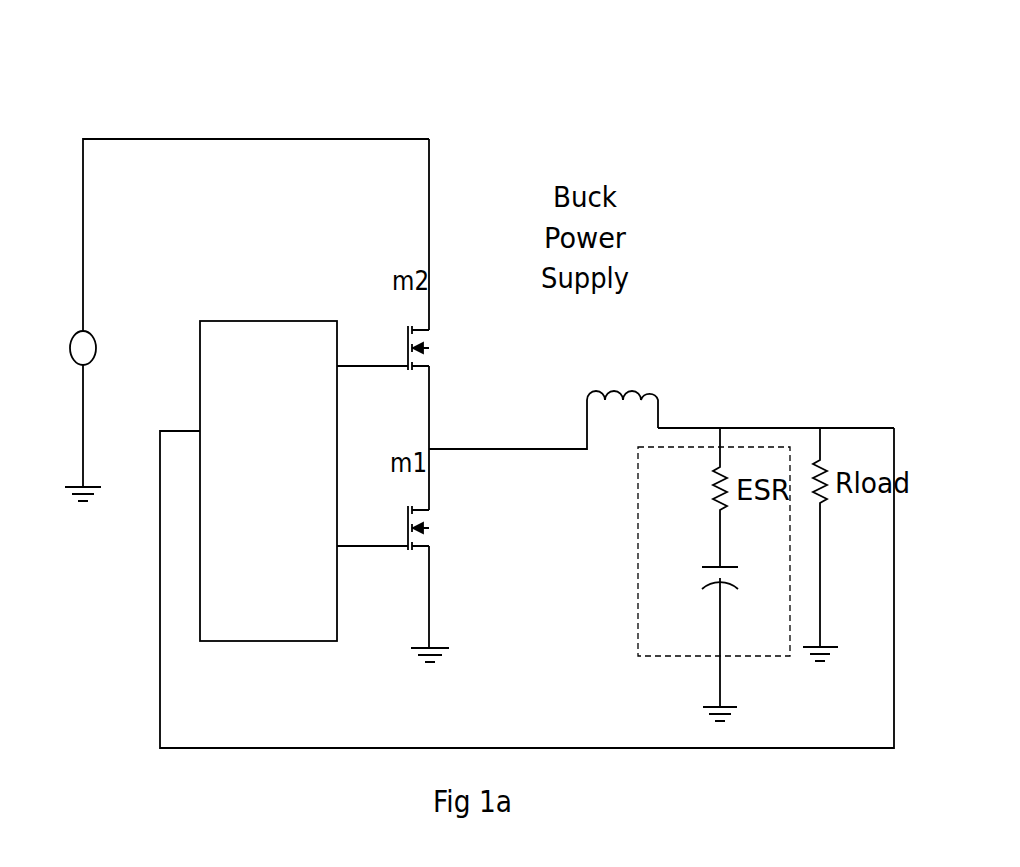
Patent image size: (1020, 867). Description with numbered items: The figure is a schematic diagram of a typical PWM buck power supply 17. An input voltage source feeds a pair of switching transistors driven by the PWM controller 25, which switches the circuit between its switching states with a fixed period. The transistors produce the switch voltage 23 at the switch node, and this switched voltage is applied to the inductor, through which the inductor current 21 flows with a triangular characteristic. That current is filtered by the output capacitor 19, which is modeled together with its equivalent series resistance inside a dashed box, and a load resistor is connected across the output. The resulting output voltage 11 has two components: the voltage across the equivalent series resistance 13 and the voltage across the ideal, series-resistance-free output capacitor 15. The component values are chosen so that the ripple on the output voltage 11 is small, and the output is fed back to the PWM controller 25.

The PWM buck power supply 17 is at (330, 105).
The PWM controller 25 is at (268, 481).
The switch voltage 23 is at (484, 408).
The inductor current 21 is at (633, 343).
The output voltage 11 is at (760, 392).
The voltage across the equivalent series resistance 13 is at (628, 490).
The voltage across the ideal output capacitor 15 is at (627, 600).
The output capacitor 19 is at (753, 590).